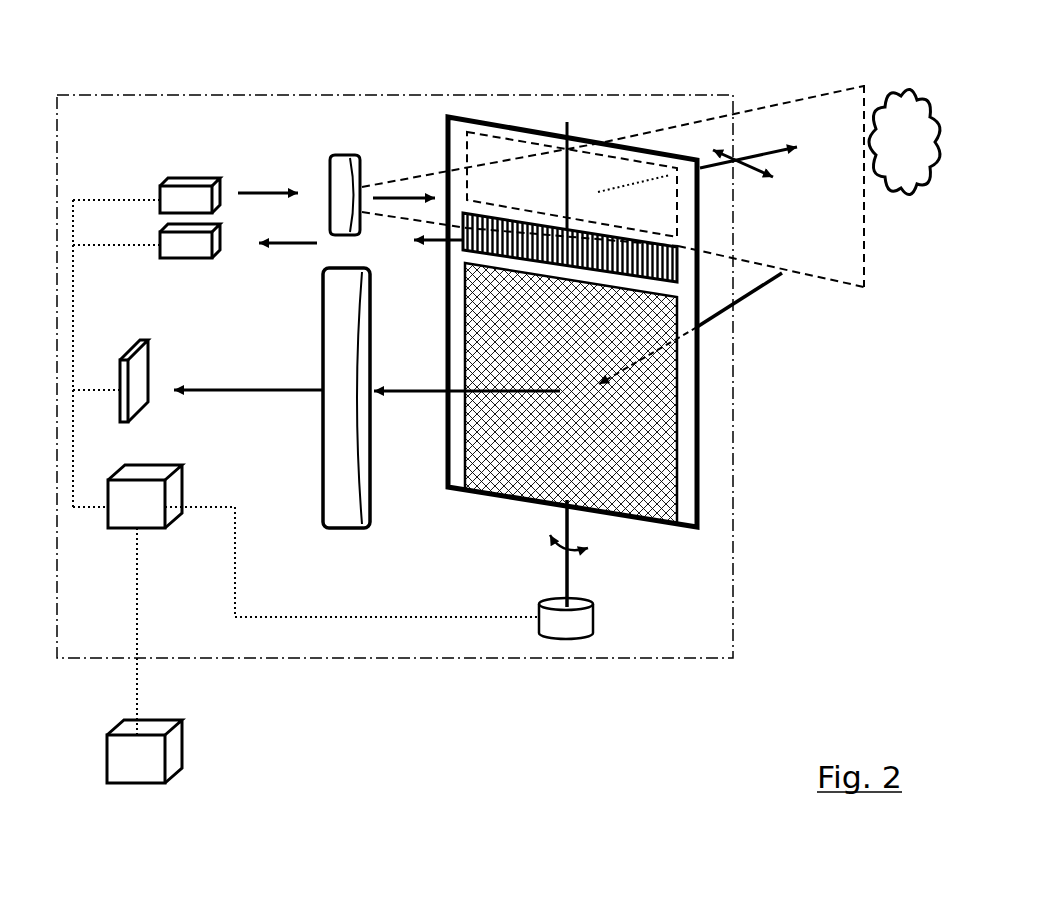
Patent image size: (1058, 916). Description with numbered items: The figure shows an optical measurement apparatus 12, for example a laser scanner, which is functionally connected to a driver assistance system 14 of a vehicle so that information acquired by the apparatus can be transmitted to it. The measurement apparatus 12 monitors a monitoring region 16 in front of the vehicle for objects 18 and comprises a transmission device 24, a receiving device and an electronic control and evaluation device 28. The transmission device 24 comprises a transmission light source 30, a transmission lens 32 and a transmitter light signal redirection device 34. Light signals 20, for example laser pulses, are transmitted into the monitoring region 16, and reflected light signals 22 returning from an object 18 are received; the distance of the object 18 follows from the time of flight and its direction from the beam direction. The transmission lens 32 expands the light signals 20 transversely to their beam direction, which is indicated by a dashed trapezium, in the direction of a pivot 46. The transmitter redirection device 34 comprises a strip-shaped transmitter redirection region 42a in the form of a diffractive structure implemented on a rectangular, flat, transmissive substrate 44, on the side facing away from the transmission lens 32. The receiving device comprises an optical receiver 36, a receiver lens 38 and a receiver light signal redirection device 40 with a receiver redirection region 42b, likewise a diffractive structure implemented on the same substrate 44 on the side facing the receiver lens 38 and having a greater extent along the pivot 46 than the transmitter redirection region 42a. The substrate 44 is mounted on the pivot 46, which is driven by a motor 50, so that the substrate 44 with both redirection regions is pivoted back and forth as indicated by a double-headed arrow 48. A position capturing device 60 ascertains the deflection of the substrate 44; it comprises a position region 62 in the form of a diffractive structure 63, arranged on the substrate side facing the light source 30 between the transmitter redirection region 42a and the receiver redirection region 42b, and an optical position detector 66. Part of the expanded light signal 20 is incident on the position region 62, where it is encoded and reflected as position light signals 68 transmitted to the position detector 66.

The optical measurement apparatus 12 is at (124, 91).
The driver assistance system 14 is at (152, 775).
The monitoring region 16 is at (858, 126).
The object 18 is at (921, 157).
The light signals 20 is at (277, 190).
The reflected light signals 22 is at (776, 283).
The transmission device 24 is at (138, 171).
The electronic control and evaluation device 28 is at (153, 522).
The transmission light source 30 is at (182, 195).
The transmission lens 32 is at (343, 175).
The transmitter light signal redirection device 34 is at (460, 155).
The optical receiver 36 is at (138, 407).
The receiver lens 38 is at (342, 443).
The receiver light signal redirection device 40 is at (435, 446).
The transmitter redirection region 42a is at (650, 222).
The receiver redirection region 42b is at (655, 425).
The substrate 44 is at (700, 382).
The pivot 46 is at (570, 568).
The double-headed arrow 48 is at (540, 540).
The motor 50 is at (578, 615).
The position capturing device 60 is at (103, 260).
The position region 62 is at (686, 272).
The diffractive structure 63 is at (687, 258).
The optical position detector 66 is at (203, 247).
The position light signals 68 is at (443, 243).